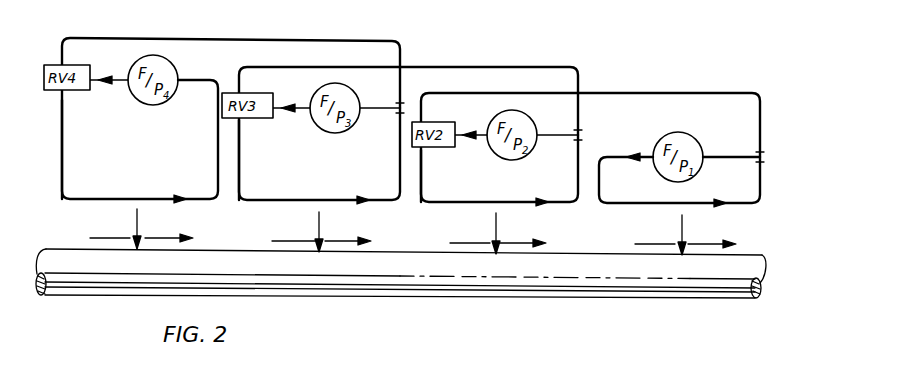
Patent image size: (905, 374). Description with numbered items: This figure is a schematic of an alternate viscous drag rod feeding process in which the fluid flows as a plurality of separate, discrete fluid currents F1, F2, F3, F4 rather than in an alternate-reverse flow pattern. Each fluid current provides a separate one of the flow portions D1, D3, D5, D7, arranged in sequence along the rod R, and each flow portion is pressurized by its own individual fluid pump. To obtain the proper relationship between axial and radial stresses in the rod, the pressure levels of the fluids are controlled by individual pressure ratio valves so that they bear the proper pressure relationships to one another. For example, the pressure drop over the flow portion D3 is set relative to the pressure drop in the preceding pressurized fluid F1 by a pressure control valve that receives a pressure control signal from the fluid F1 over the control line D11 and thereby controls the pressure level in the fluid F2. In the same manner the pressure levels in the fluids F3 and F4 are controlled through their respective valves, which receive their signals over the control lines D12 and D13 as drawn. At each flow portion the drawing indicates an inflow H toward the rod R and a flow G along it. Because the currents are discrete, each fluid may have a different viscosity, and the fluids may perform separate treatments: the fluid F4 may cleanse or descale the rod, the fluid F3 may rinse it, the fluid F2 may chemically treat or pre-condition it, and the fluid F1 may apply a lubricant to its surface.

The feedback duct from F/P3 to RV4 D13 is at (280, 41).
The feedback duct from F/P2 to RV3 D12 is at (545, 67).
The control line D11 is at (707, 93).
The flow portion D7 is at (90, 199).
The flow portion D5 is at (327, 200).
The flow portion D3 is at (517, 202).
The flow portion D1 is at (647, 203).
The fluid current F4 is at (98, 83).
The fluid current F3 is at (297, 112).
The fluid current F2 is at (483, 138).
The fluid current F1 is at (645, 155).
The heat input to roll H is at (102, 238).
The gas flow along roll G is at (140, 218).
The roll R is at (53, 257).